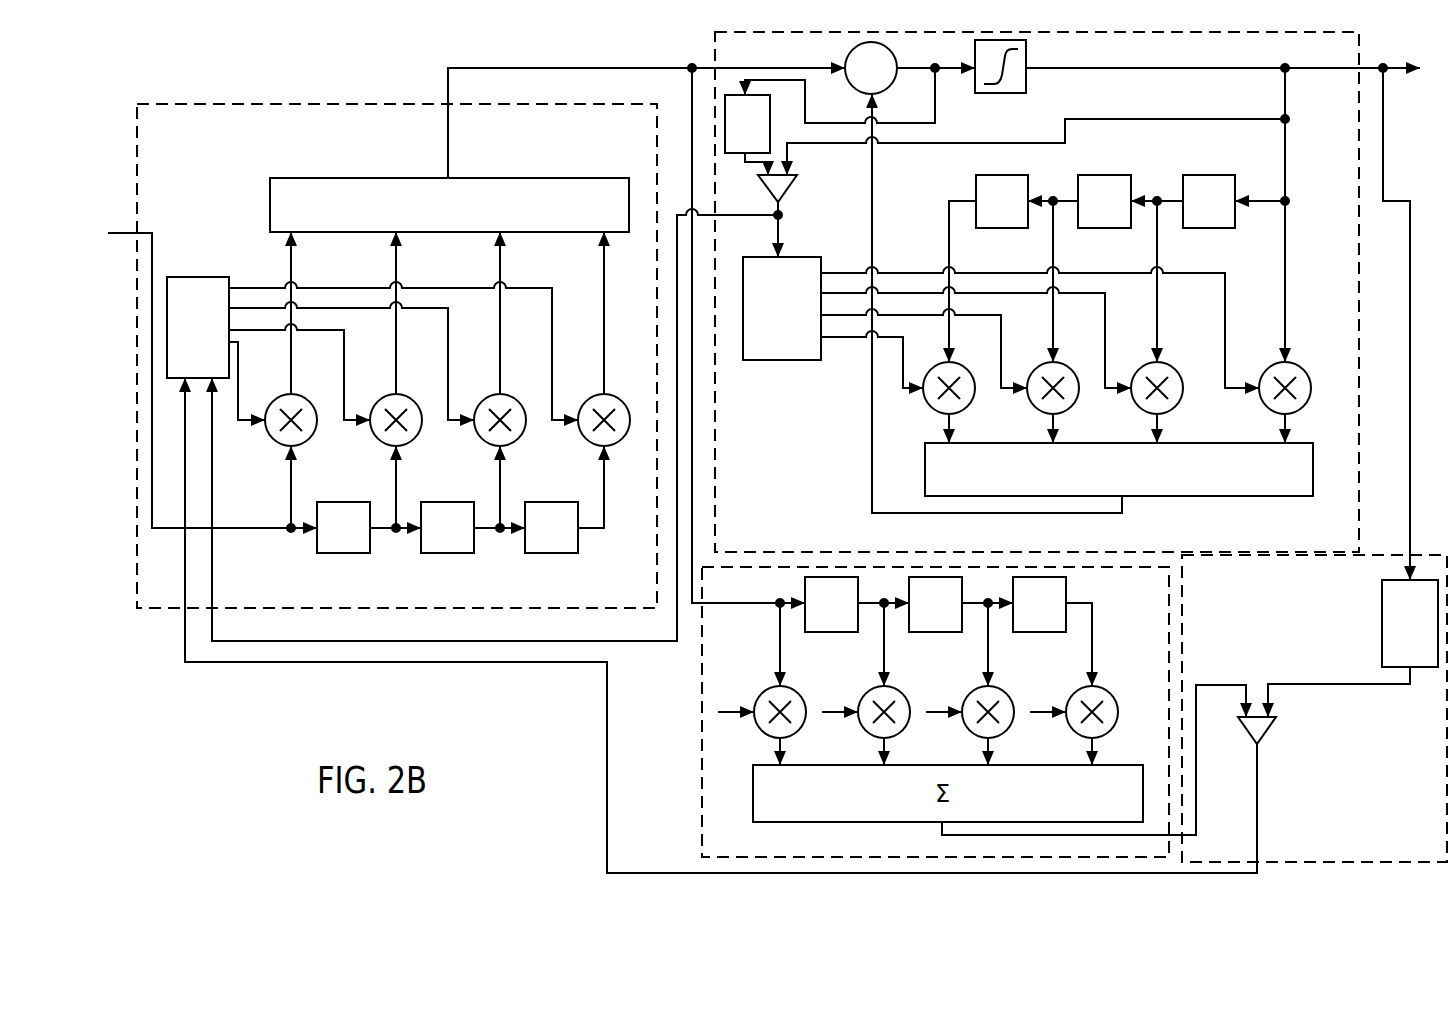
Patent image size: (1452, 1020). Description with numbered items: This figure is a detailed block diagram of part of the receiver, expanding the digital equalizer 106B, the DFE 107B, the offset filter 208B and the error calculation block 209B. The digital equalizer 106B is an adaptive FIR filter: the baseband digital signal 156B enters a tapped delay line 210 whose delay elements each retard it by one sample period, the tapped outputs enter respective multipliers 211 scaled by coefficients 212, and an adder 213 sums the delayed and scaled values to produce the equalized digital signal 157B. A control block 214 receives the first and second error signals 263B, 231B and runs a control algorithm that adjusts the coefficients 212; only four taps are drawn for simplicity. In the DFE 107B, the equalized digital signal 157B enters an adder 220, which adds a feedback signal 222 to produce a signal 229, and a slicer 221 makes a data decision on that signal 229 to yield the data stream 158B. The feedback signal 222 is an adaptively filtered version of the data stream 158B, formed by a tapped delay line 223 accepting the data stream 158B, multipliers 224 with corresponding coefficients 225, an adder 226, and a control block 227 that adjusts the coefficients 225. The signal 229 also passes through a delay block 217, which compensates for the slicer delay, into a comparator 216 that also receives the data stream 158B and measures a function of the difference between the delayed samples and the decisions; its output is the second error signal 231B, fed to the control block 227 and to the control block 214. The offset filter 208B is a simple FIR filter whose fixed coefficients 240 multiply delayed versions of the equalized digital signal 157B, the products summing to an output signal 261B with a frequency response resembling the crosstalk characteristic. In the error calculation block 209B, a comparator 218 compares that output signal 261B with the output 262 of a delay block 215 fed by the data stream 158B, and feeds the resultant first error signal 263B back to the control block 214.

The digital equalizer 106B is at (397, 356).
The baseband digital signal 156B is at (134, 233).
The equalized digital signal 157B is at (692, 68).
The tapped delay line 210 is at (578, 553).
The multipliers 211 is at (308, 440).
The coefficients 212 is at (250, 312).
The adder 213 is at (449, 286).
The control block 214 is at (198, 327).
The DFE 107B is at (1037, 292).
The adder 220 is at (850, 58).
The slicer 221 is at (1026, 86).
The signal 229 is at (937, 97).
The delay block 217 is at (747, 124).
The comparator 216 is at (790, 183).
The second error signal 231B is at (735, 216).
The control block 227 is at (782, 308).
The coefficients 225 is at (824, 276).
The tapped delay line 223 is at (1241, 175).
The multipliers 224 is at (966, 408).
The adder 226 is at (1119, 469).
The feedback signal 222 is at (872, 462).
The data stream 158B is at (1337, 78).
The offset filter 208B is at (935, 712).
The coefficients 240 is at (718, 712).
The error calculation block 209B is at (1314, 708).
The delay block 215 is at (1410, 367).
The output 262 is at (1345, 686).
The output signal 261B is at (1212, 684).
The comparator 218 is at (1270, 728).
The first error signal 263B is at (1293, 834).